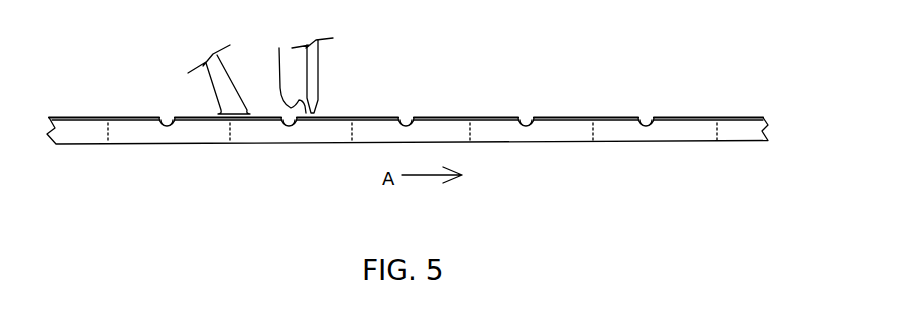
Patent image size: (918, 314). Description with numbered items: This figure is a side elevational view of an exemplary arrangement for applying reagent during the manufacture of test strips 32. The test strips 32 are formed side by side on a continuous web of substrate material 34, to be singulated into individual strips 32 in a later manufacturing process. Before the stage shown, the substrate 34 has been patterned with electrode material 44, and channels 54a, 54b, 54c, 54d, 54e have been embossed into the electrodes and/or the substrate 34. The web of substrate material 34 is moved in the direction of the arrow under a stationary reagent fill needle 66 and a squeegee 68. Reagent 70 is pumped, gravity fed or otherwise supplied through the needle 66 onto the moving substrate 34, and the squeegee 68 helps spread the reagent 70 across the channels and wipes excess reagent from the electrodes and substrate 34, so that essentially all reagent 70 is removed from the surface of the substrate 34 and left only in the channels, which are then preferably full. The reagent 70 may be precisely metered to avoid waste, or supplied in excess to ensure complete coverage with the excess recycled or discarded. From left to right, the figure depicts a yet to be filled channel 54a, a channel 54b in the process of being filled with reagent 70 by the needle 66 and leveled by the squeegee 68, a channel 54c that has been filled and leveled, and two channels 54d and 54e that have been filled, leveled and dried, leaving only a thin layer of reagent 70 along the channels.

The test strip 32 is at (65, 133).
The substrate material 34 is at (769, 127).
The electrode material 44 is at (727, 117).
The channel 54a is at (174, 126).
The channel 54b is at (293, 126).
The channel 54c is at (410, 126).
The channel 54d is at (530, 126).
The channel 54e is at (652, 125).
The reagent fill needle 66 is at (205, 76).
The squeegee 68 is at (318, 66).
The reagent 70 is at (279, 48).